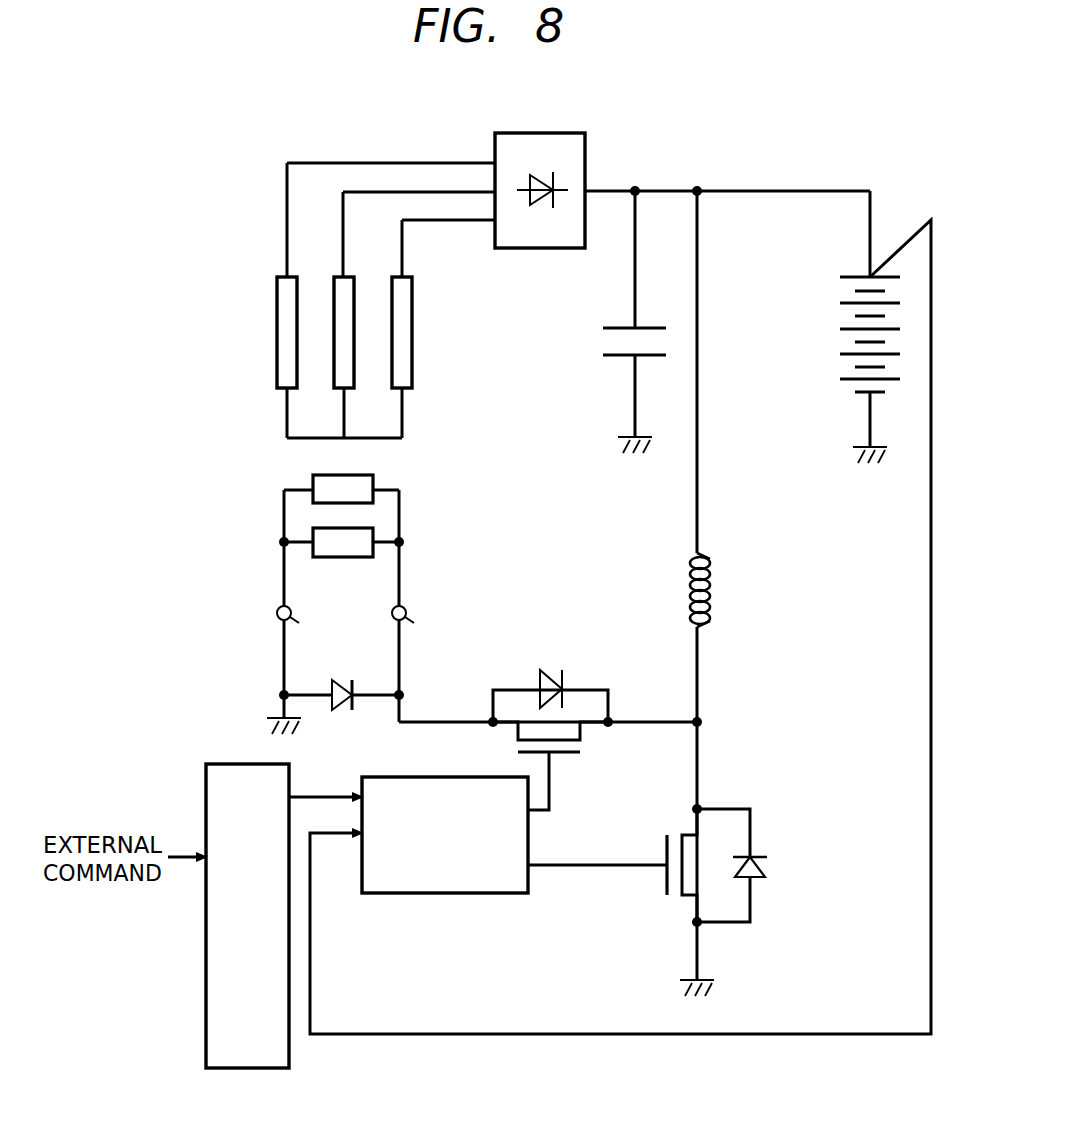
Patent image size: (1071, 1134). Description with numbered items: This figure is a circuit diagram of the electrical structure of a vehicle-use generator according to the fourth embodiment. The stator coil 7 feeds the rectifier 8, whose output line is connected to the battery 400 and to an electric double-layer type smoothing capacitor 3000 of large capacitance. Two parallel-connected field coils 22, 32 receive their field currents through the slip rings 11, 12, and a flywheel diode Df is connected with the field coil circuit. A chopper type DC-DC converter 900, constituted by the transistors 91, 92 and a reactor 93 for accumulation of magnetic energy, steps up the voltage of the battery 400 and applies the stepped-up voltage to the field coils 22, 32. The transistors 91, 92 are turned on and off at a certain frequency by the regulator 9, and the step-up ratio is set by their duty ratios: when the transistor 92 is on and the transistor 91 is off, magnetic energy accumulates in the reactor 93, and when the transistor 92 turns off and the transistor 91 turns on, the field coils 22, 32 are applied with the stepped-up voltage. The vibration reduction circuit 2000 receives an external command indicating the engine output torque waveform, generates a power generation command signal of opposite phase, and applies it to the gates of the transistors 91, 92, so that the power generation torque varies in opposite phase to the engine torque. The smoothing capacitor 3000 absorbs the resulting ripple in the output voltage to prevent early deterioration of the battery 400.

The rectifier 8 is at (562, 133).
The stator coil 7 is at (424, 346).
The electric double-layer type smoothing capacitor 3000 is at (601, 340).
The battery 400 is at (834, 341).
The field coil 22 is at (370, 474).
The field coil 32 is at (370, 527).
The slip ring 11 is at (277, 611).
The slip ring 12 is at (392, 611).
The flywheel diode Df is at (335, 715).
The vibration reduction circuit 2000 is at (226, 764).
The regulator 9 is at (422, 894).
The transistor 91 is at (570, 678).
The reactor 93 is at (713, 595).
The chopper type DC-DC converter 900 is at (730, 731).
The transistor 92 is at (762, 853).